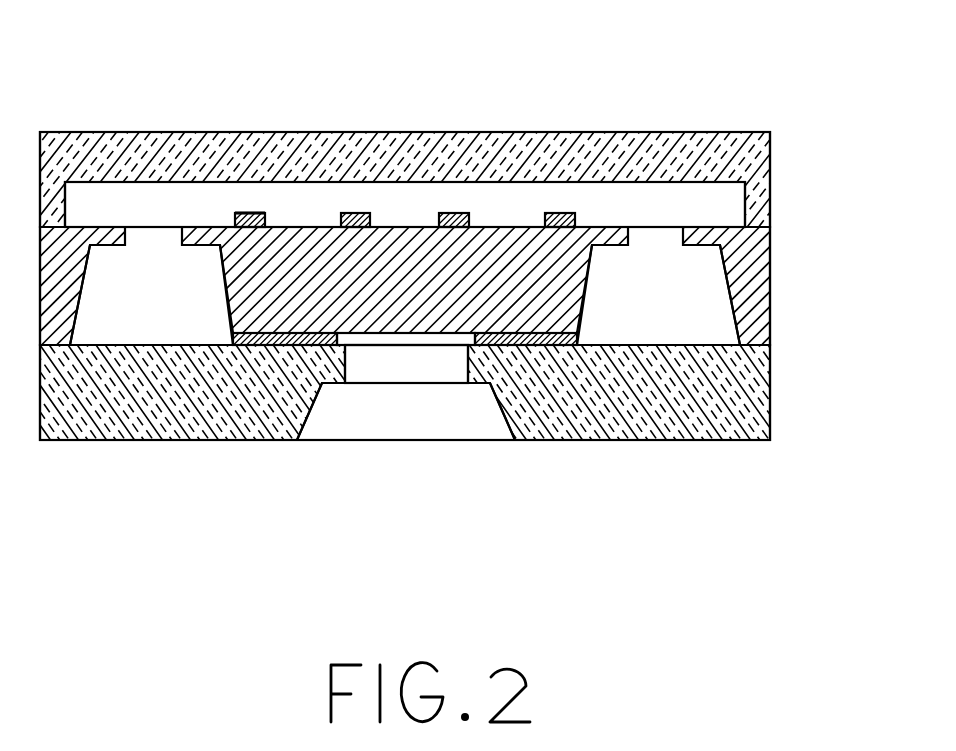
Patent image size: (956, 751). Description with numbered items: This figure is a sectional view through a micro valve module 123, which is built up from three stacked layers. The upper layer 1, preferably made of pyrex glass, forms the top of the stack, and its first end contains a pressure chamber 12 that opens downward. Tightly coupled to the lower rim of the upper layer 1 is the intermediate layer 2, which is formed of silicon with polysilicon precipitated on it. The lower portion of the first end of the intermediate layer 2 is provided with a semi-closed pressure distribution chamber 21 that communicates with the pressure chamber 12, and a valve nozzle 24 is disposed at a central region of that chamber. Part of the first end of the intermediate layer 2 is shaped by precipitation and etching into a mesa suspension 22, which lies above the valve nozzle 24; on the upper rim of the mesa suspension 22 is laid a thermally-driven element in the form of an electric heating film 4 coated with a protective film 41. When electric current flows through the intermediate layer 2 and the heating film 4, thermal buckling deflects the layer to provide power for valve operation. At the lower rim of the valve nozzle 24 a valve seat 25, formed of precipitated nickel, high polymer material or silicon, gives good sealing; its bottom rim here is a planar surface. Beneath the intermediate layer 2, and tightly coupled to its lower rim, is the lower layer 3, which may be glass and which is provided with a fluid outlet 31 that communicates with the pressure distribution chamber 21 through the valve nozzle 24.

The module 123 is at (636, 91).
The upper layer 1 is at (500, 140).
The pressure chamber 12 is at (395, 192).
The electric heating film 4 is at (356, 213).
The protective film 41 is at (241, 213).
The intermediate layer 2 is at (758, 290).
The pressure distribution chamber 21 is at (178, 311).
The mesa suspension 22 is at (425, 297).
The valve seat 25 is at (296, 344).
The valve nozzle 24 is at (397, 350).
The lower layer 3 is at (760, 392).
The fluid outlet 31 is at (420, 427).